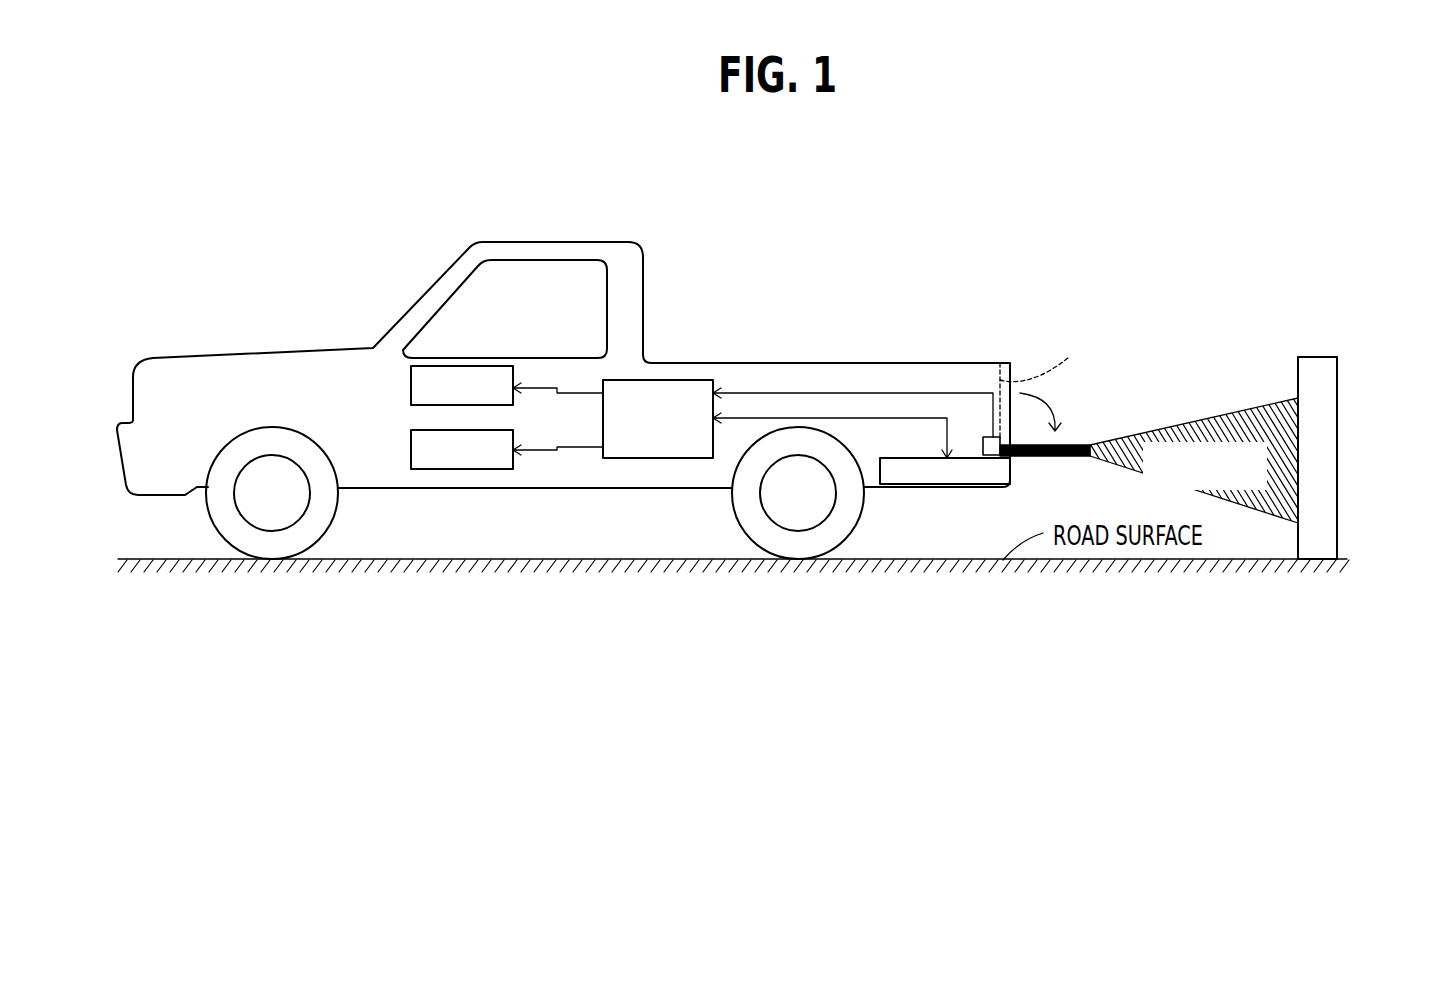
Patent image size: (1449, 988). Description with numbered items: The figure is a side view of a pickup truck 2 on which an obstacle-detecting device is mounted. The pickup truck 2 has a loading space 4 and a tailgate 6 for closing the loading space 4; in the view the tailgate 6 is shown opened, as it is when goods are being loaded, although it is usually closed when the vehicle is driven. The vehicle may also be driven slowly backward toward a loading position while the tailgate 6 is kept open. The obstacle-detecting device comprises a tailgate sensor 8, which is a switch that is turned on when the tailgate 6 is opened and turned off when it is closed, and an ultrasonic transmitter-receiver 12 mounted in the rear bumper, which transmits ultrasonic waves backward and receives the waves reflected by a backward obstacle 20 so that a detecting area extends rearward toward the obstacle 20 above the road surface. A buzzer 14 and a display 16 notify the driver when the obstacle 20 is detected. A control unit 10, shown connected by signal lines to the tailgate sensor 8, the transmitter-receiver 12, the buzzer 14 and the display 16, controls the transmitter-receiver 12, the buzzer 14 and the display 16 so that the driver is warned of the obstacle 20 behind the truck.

The pickup truck 2 is at (637, 303).
The loading space 4 is at (872, 368).
The tailgate 6 is at (1073, 445).
The tailgate sensor 8 is at (983, 438).
The control unit 10 is at (703, 380).
The ultrasonic transmitter-receiver 12 is at (905, 484).
The buzzer 14 is at (411, 386).
The display 16 is at (411, 447).
The obstacle 20 is at (1317, 357).